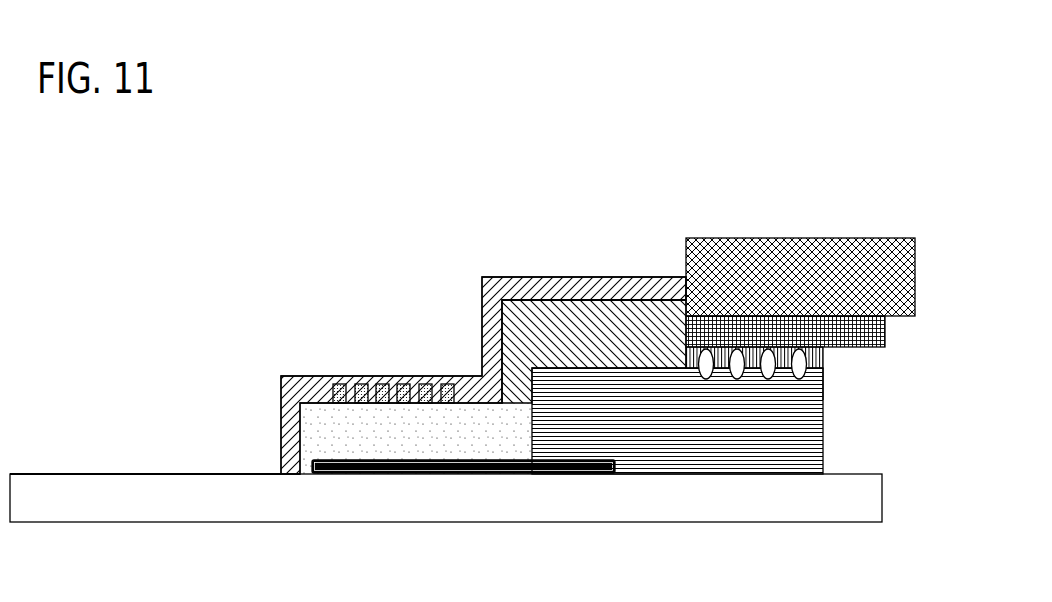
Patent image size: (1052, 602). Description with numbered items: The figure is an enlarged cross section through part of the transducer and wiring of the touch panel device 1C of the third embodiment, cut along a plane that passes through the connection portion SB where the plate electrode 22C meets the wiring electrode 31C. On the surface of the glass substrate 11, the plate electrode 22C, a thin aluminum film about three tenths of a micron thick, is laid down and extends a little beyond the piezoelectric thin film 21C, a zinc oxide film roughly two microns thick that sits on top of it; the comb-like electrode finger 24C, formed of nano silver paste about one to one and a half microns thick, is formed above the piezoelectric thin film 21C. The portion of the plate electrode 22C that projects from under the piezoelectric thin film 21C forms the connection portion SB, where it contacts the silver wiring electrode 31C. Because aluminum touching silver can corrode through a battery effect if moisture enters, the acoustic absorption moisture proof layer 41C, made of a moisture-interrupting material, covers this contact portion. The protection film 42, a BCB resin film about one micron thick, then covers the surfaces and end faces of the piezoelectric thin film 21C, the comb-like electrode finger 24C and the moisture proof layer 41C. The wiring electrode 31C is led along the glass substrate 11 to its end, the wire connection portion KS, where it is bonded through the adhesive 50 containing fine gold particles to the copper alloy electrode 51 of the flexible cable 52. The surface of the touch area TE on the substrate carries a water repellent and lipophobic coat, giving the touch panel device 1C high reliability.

The touch panel device 1C is at (476, 187).
The glass substrate 11 is at (133, 522).
The touch area TE is at (30, 474).
The piezoelectric thin film 21C is at (333, 443).
The plate electrode 22C is at (425, 468).
The connection portion SB is at (583, 468).
The comb-like electrode finger 24C is at (362, 383).
The wiring electrode 31C is at (823, 448).
The acoustic absorption moisture proof layer 41C is at (570, 330).
The protection film 42 is at (495, 277).
The adhesive 50 is at (817, 360).
The electrode 51 is at (885, 337).
The flexible cable 52 is at (763, 238).
The wire connection portion KS is at (830, 391).